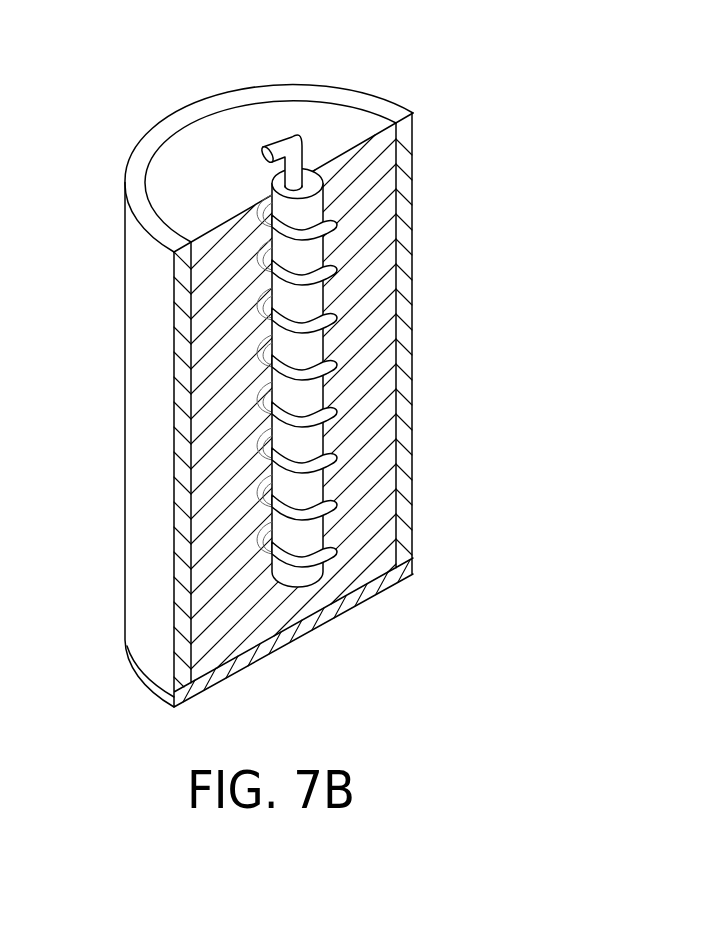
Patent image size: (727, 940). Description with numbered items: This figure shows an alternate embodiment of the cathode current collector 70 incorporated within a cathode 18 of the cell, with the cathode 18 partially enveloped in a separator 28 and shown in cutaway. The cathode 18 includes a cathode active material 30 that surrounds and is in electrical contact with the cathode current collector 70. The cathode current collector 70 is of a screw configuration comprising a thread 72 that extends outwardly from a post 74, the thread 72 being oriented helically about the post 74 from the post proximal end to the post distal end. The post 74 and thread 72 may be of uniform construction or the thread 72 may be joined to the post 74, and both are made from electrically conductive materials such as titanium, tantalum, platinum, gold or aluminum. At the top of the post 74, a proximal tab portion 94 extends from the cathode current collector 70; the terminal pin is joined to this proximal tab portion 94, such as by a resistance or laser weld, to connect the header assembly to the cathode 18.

The cathode 18 is at (476, 71).
The separator 28 is at (416, 326).
The cathode active material 30 is at (384, 457).
The cathode current collector 70 is at (307, 255).
The thread 72 is at (317, 422).
The post 74 is at (307, 303).
The proximal tab portion 94 is at (278, 140).